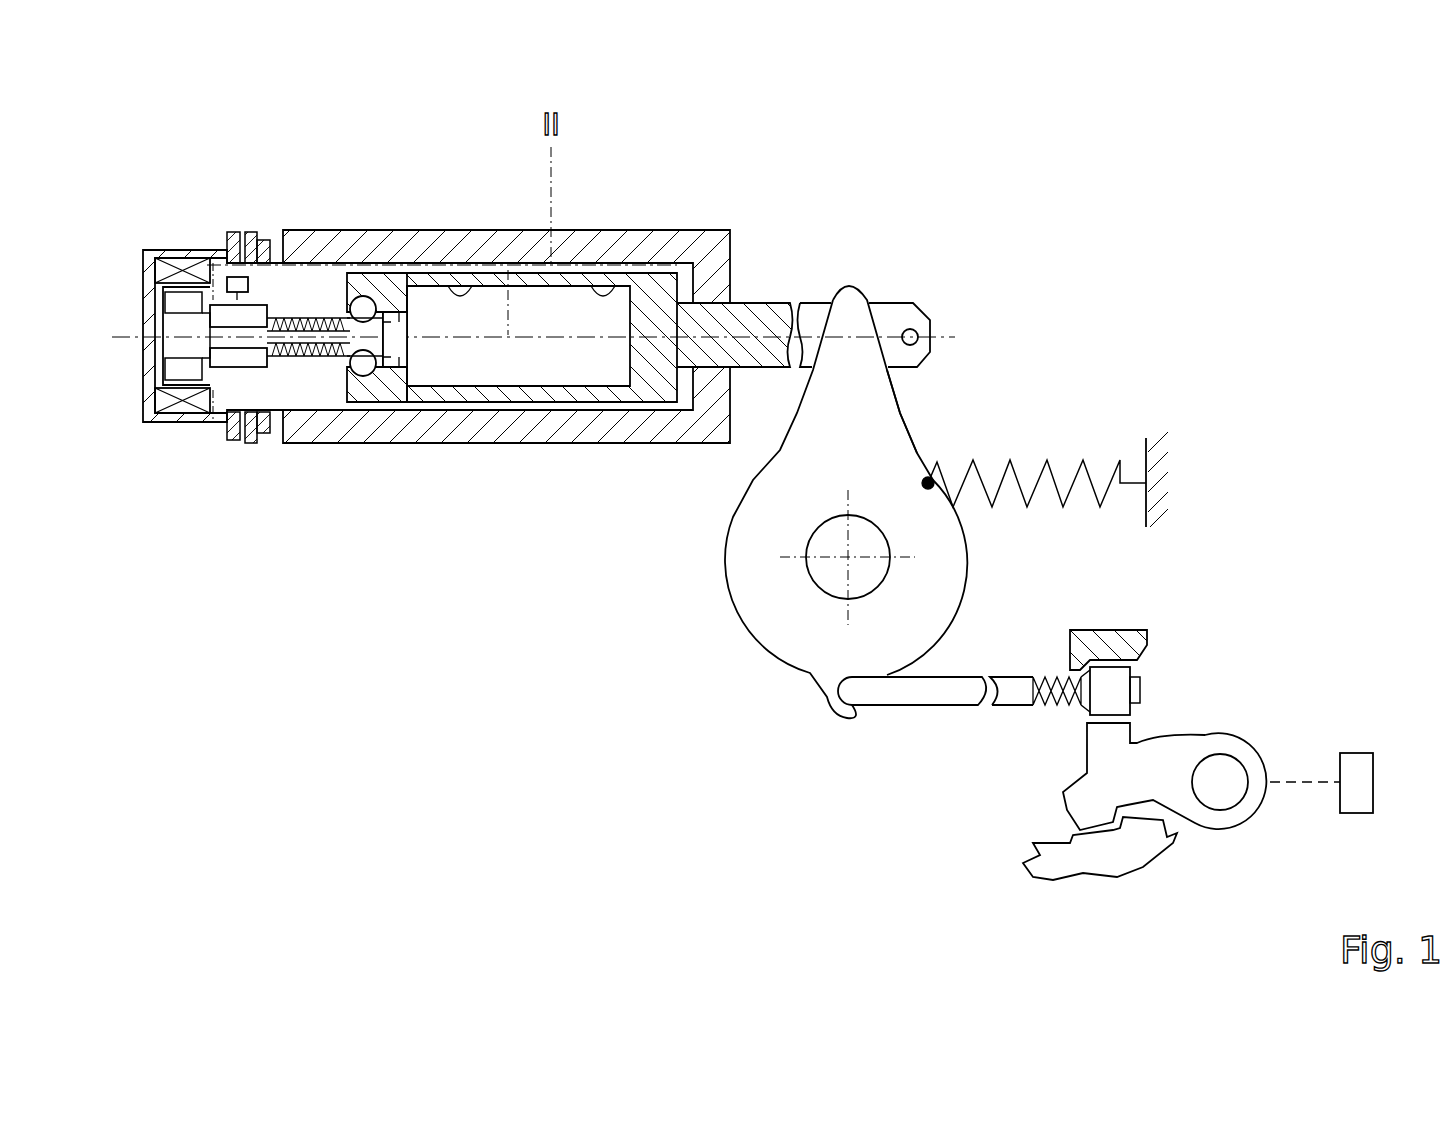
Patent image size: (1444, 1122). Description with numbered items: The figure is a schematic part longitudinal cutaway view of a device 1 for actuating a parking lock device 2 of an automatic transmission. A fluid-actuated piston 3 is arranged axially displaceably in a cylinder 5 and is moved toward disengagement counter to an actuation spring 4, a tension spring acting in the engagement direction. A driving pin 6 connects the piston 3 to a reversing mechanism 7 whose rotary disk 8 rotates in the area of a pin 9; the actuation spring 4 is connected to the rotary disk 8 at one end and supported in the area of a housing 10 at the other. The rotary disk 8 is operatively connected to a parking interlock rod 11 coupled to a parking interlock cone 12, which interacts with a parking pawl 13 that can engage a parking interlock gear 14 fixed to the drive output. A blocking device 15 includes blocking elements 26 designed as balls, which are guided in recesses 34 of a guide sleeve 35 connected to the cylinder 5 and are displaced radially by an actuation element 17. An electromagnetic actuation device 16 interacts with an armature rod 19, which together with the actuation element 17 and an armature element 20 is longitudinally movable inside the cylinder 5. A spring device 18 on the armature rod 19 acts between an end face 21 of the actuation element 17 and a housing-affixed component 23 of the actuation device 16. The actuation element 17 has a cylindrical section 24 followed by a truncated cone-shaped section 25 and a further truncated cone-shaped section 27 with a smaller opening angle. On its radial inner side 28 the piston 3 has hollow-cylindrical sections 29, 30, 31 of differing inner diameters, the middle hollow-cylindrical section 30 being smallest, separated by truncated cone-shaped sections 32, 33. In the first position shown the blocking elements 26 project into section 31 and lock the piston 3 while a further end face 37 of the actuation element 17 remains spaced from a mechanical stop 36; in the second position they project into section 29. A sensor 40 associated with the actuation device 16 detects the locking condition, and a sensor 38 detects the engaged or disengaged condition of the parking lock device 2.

The device 1 is at (825, 213).
The parking lock device 2 is at (1216, 614).
The piston 3 is at (703, 290).
The actuation spring 4 is at (1012, 470).
The cylinder 5 is at (640, 262).
The driving pin 6 is at (745, 322).
The reversing mechanism 7 is at (753, 667).
The rotary disk 8 is at (879, 428).
The pin 9 is at (853, 570).
The housing 10 is at (1160, 472).
The parking interlock rod 11 is at (900, 700).
The parking interlock cone 12 is at (1102, 698).
The parking pawl 13 is at (1080, 795).
The parking interlock gear 14 is at (1104, 848).
The blocking device 15 is at (291, 370).
The electromagnetic actuation device 16 is at (168, 243).
The actuation element 17 is at (335, 350).
The spring device 18 is at (283, 302).
The armature rod 19 is at (215, 378).
The armature element 20 is at (173, 328).
The end face 21 is at (300, 312).
The housing-affixed component 23 is at (213, 330).
The cylindrical section 24 is at (395, 312).
The truncated cone-shaped section 25 is at (395, 352).
The blocking elements 26 is at (390, 340).
The further truncated cone-shaped section 27 is at (352, 300).
The radial inner side 28 is at (622, 300).
The hollow-cylindrical section 29 is at (478, 290).
The middle hollow-cylindrical section 30 is at (430, 350).
The hollow-cylindrical section 31 is at (350, 350).
The truncated cone-shaped section 32 is at (415, 360).
The truncated cone-shaped section 33 is at (352, 312).
The recesses 34 is at (362, 377).
The guide sleeve 35 is at (248, 246).
The mechanical stop 36 is at (400, 300).
The further end face 37 is at (440, 338).
The sensor 38 is at (1355, 795).
The sensor 40 is at (233, 277).